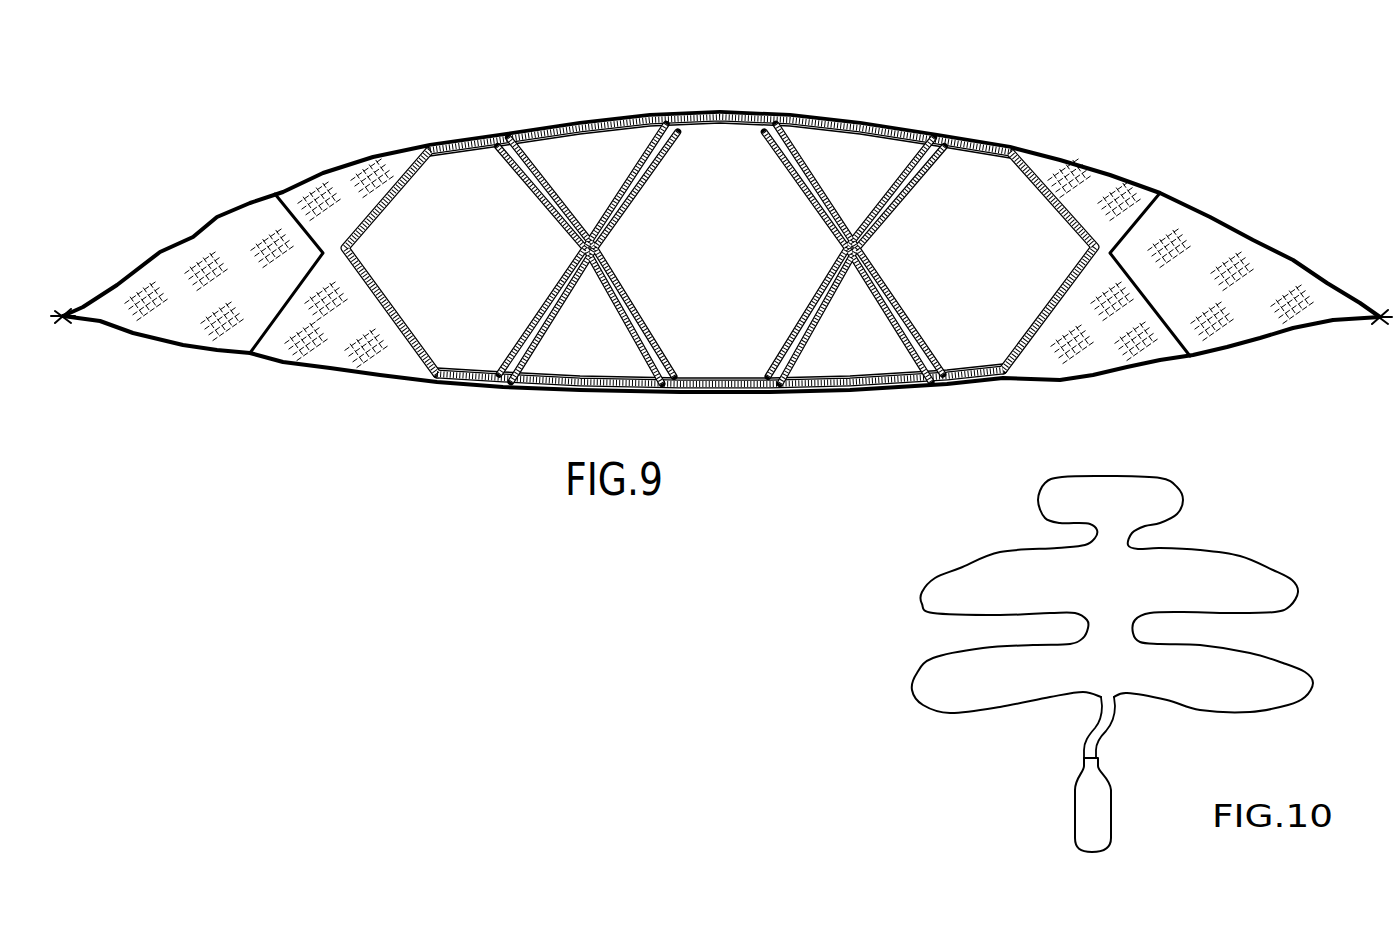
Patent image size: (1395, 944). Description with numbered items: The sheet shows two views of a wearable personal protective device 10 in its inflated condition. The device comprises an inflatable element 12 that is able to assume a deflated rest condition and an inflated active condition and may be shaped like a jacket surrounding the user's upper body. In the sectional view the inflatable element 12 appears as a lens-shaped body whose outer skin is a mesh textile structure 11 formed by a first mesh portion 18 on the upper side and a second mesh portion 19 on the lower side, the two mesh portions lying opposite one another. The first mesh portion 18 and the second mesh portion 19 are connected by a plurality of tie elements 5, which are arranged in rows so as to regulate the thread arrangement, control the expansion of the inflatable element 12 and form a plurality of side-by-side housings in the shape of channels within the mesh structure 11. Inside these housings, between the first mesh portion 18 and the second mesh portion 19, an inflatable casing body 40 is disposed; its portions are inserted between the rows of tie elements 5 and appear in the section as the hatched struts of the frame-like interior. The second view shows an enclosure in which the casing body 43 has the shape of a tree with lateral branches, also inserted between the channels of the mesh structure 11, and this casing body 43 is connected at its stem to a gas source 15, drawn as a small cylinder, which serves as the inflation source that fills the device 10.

In FIG. 9, the personal protective device 10 is at (721, 240).
In FIG. 9, the mesh textile structure 11 is at (720, 213).
In FIG. 9, the inflatable element 12 is at (1005, 135).
In FIG. 9, the tie elements 5 is at (298, 218).
In FIG. 9, the first mesh portion 18 is at (160, 252).
In FIG. 9, the second mesh portion 19 is at (186, 352).
In FIG. 9, the inflatable casing body 40 is at (510, 183).
In FIG. 10, the inflatable casing body 43 is at (1209, 532).
In FIG. 10, the gas source 15 is at (1082, 793).